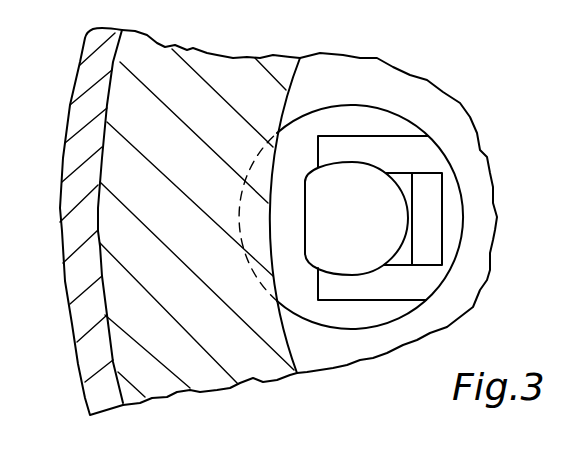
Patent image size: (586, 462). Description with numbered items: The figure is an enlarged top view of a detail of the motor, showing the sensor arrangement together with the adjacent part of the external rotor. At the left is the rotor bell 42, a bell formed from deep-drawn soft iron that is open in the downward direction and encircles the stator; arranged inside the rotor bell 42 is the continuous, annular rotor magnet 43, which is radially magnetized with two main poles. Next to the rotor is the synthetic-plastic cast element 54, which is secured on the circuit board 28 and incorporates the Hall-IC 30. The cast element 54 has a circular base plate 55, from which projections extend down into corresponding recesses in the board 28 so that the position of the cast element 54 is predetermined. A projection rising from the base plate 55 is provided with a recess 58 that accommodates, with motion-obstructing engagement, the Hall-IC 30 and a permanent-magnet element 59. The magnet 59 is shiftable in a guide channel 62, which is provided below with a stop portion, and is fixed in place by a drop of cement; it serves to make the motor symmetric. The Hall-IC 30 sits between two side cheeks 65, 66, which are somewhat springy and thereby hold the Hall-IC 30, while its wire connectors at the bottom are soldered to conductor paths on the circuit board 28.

The board 28 is at (473, 280).
The Hall-IC 30 is at (366, 234).
The rotor bell 42 is at (75, 277).
The rotor magnet 43 is at (210, 378).
The cast element 54 is at (396, 128).
The base plate 55 is at (328, 118).
The recess 58 is at (365, 167).
The permanent-magnet element 59 is at (439, 207).
The guide channel 62 is at (438, 246).
The side cheek 65 is at (347, 145).
The side cheek 66 is at (348, 287).